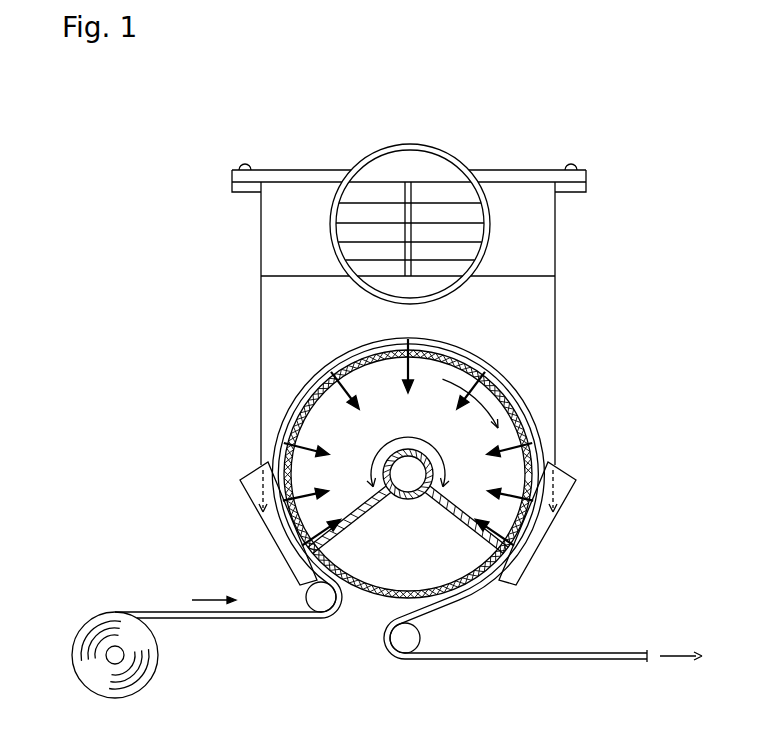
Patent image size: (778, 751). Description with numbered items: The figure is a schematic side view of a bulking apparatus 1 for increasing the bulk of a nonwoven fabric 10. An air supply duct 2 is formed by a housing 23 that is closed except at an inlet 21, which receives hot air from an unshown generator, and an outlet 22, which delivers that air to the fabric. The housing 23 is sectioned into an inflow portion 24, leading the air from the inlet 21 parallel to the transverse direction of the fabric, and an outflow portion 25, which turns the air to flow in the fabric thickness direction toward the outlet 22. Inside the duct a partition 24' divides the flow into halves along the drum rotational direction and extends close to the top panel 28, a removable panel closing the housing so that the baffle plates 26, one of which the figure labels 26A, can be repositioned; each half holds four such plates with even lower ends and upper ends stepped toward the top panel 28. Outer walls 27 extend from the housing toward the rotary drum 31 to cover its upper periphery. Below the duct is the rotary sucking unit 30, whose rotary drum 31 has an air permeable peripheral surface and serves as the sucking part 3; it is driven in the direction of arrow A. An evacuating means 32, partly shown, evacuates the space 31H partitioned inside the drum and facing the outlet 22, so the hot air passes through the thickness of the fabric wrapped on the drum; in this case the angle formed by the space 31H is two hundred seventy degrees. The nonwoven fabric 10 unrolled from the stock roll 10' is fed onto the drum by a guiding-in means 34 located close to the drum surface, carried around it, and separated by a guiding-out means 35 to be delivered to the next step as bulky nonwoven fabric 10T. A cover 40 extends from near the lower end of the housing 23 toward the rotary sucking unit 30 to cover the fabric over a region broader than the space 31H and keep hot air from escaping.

The bulking apparatus 1 is at (613, 131).
The air supply duct 2 is at (254, 219).
The sucking part 3 is at (344, 495).
The nonwoven fabric 10 is at (381, 498).
The stock roll 10' is at (94, 618).
The bulky nonwoven fabric 10T is at (616, 656).
The inlet 21 is at (442, 155).
The outlet 22 is at (336, 352).
The housing 23 is at (261, 268).
The inflow portion 24 is at (408, 167).
The partition 24' is at (406, 167).
The outflow portion 25 is at (556, 331).
The baffle plates 26 is at (532, 229).
The guide plate 26A is at (472, 213).
The outer walls 27 is at (448, 193).
The top panel 28 is at (293, 169).
The rotary sucking unit 30 is at (368, 620).
The rotary drum 31 is at (326, 402).
The space 31H is at (438, 426).
The evacuating means 32 is at (410, 484).
The guiding-in means 34 is at (318, 599).
The guiding-out means 35 is at (403, 646).
The cover 40 is at (276, 536).
The arrow A is at (526, 380).